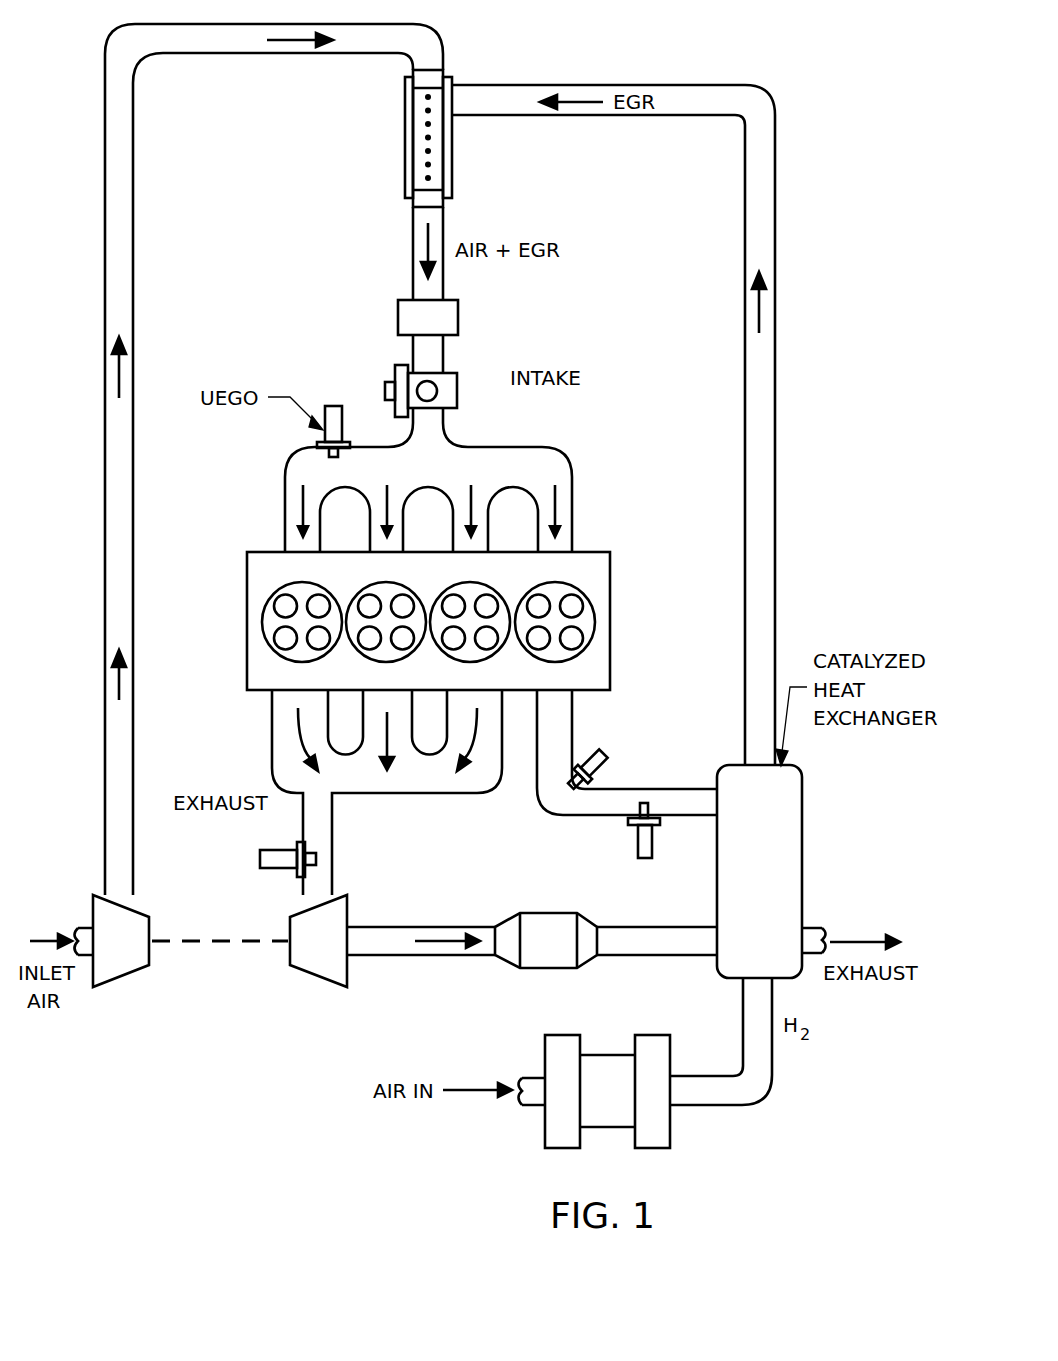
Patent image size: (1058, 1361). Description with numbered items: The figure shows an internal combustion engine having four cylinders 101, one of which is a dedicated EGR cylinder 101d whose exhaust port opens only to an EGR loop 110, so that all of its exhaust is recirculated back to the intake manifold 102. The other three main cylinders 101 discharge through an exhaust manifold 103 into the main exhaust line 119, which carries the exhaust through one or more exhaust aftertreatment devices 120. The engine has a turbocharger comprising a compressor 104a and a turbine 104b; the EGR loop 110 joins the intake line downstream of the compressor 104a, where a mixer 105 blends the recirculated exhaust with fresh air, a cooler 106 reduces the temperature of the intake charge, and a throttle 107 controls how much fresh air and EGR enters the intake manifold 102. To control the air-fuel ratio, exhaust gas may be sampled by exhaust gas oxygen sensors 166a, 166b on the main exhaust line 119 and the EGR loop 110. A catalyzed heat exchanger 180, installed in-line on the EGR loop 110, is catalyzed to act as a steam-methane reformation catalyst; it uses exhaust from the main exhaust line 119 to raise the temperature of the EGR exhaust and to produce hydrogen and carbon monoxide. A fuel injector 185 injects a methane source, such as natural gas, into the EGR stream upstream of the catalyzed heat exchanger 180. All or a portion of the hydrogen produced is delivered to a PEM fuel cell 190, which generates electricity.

The cylinders 101 is at (437, 621).
The dedicated EGR cylinder 101d is at (597, 622).
The intake manifold 102 is at (530, 447).
The exhaust manifold 103 is at (272, 760).
The compressor 104a is at (122, 975).
The turbine 104b is at (317, 975).
The mixer 105 is at (405, 140).
The cooler 106 is at (398, 318).
The throttle 107 is at (385, 390).
The EGR loop 110 is at (775, 305).
The main exhaust line 119 is at (657, 955).
The exhaust aftertreatment device 120 is at (548, 968).
The exhaust gas oxygen sensor 166a is at (260, 860).
The exhaust gas oxygen sensor 166b is at (645, 858).
The catalyzed heat exchanger 180 is at (802, 872).
The fuel injector 185 is at (602, 772).
The PEM fuel cell 190 is at (608, 1127).